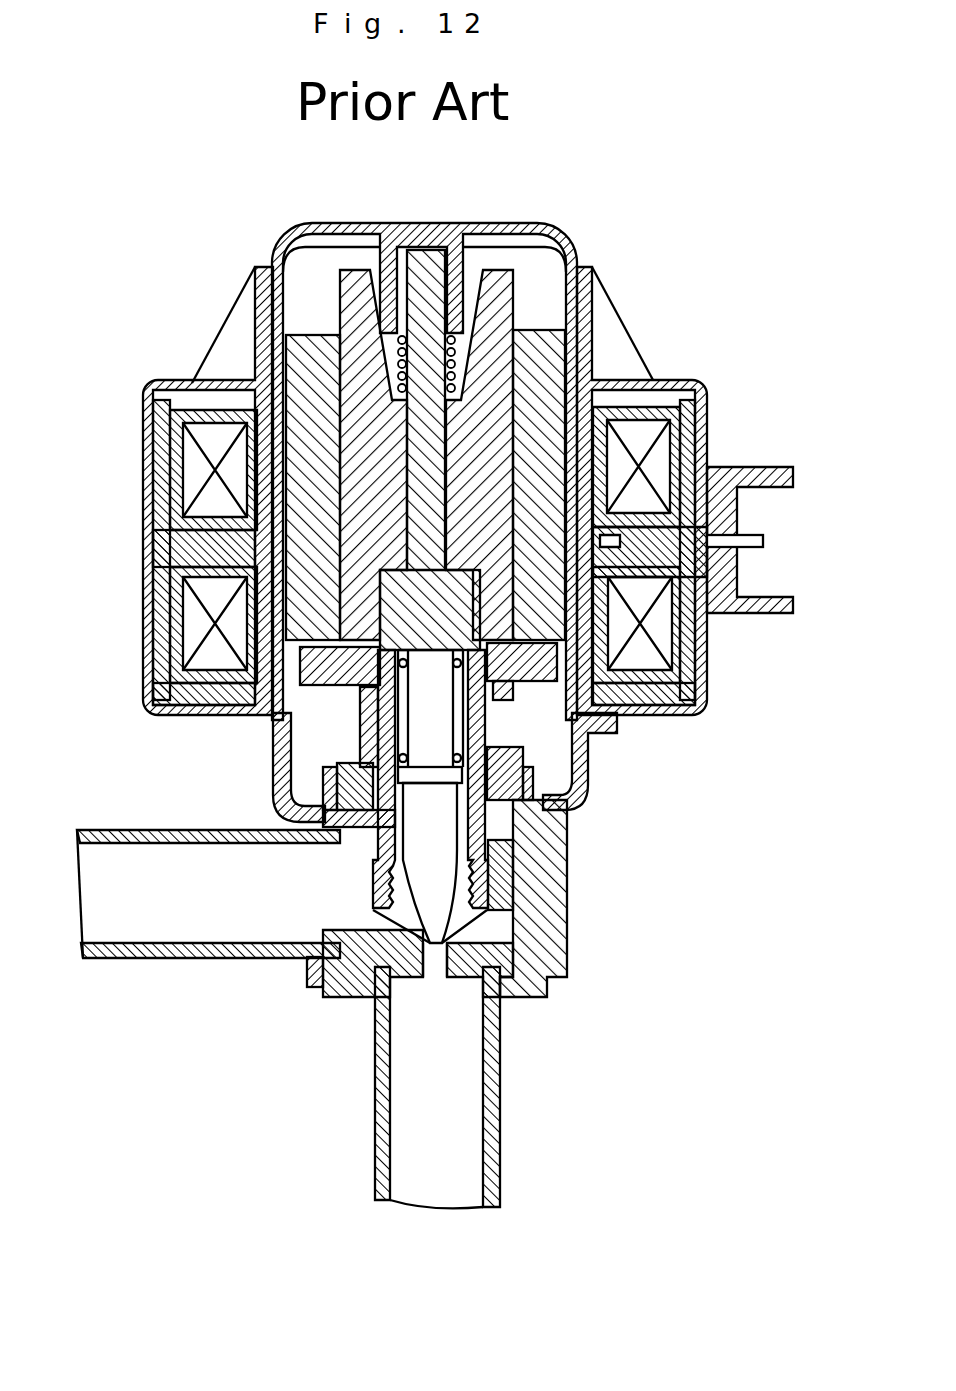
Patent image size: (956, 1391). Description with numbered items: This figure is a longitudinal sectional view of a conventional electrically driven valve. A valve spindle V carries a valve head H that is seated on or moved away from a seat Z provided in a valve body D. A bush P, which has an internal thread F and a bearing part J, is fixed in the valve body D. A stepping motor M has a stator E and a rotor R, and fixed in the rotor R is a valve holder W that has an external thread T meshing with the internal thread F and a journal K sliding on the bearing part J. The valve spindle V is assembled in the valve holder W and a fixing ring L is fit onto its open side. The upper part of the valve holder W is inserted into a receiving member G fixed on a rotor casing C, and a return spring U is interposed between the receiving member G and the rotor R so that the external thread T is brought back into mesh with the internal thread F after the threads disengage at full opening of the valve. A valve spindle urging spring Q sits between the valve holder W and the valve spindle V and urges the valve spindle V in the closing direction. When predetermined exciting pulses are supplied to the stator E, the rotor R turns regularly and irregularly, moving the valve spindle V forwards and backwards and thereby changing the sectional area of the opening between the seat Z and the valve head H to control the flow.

The rotor casing C is at (290, 231).
The receiving member G is at (387, 297).
The return spring U is at (398, 350).
The stepping motor M is at (533, 325).
The rotor R is at (537, 370).
The stator E is at (653, 453).
The valve holder W is at (380, 730).
The journal K is at (337, 783).
The external thread T is at (373, 827).
The valve spindle urging spring Q is at (460, 720).
The bearing part J is at (497, 813).
The bush P is at (477, 853).
The valve body D is at (490, 912).
The internal thread F is at (553, 977).
The valve head H is at (445, 948).
The valve spindle V is at (430, 910).
The fixing ring L is at (307, 977).
The seat Z is at (377, 1067).